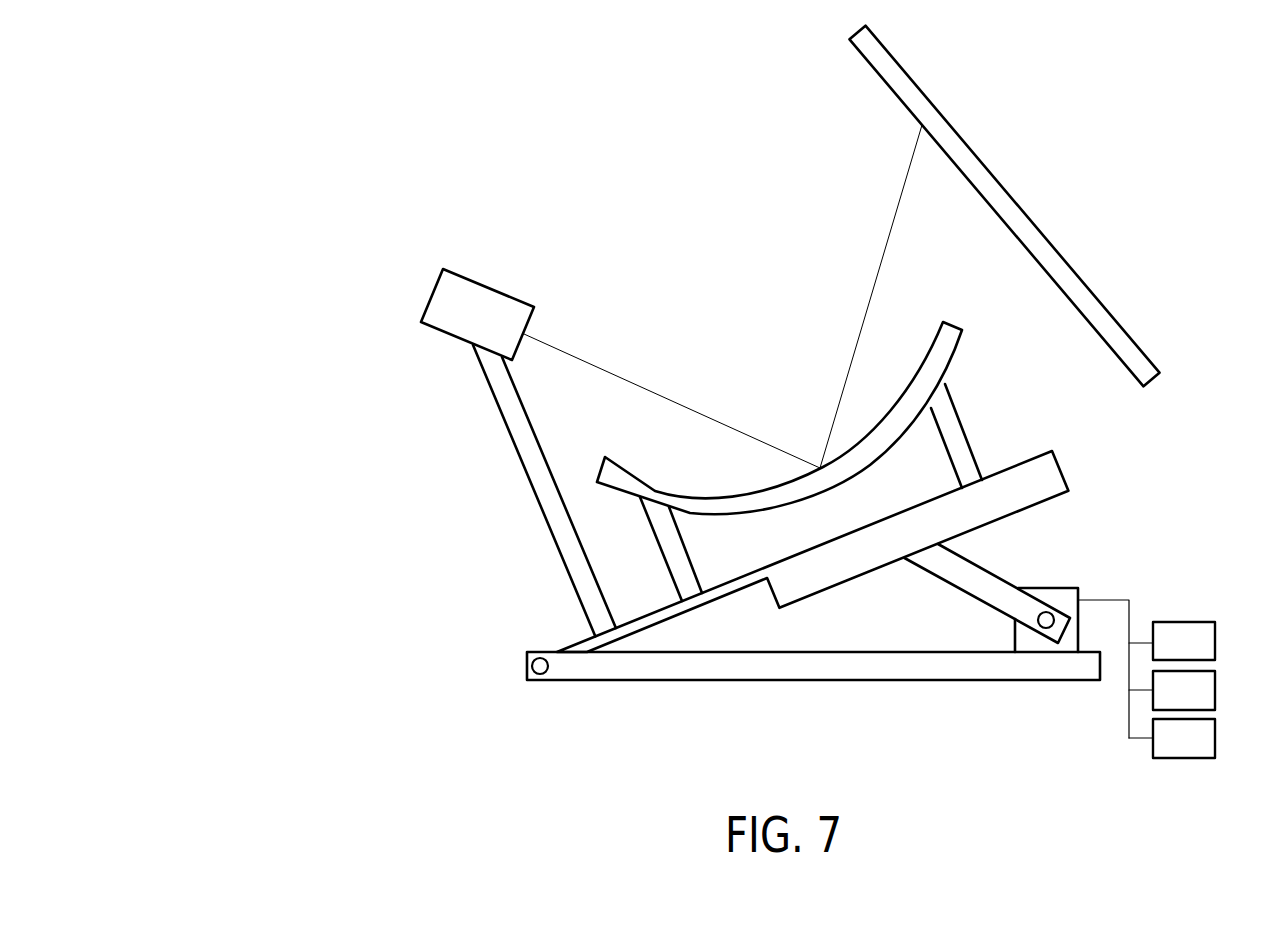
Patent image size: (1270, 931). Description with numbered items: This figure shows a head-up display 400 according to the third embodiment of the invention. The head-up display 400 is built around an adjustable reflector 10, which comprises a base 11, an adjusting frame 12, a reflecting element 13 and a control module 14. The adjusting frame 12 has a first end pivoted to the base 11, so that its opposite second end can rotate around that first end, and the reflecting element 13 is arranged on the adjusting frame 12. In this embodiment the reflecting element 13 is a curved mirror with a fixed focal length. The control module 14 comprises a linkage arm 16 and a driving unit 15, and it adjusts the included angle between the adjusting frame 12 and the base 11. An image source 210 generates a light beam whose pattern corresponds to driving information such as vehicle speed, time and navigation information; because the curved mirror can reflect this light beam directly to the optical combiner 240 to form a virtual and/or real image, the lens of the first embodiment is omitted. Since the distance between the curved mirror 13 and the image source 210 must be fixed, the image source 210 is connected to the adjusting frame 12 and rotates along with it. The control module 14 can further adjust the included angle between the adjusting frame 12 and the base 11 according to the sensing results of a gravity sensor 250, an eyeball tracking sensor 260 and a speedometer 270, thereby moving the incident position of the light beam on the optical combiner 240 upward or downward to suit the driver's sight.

The head-up display 400 is at (324, 138).
The adjustable reflector 10 is at (551, 727).
The base 11 is at (832, 670).
The adjusting frame 12 is at (648, 617).
The reflecting element 13 is at (946, 326).
The control module 14 is at (1098, 552).
The driving unit 15 is at (1058, 588).
The linkage arm 16 is at (980, 588).
The image source 210 is at (481, 290).
The optical combiner 240 is at (1137, 388).
The gravity sensor 250 is at (1203, 655).
The eyeball tracking sensor 260 is at (1203, 704).
The speedometer 270 is at (1203, 751).